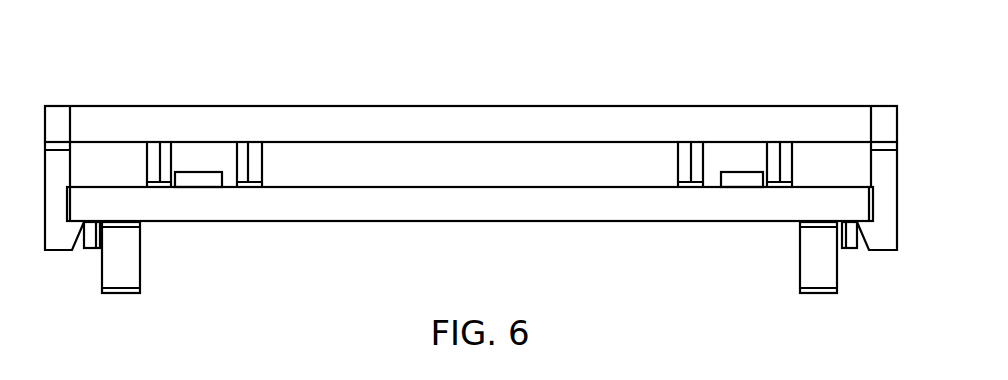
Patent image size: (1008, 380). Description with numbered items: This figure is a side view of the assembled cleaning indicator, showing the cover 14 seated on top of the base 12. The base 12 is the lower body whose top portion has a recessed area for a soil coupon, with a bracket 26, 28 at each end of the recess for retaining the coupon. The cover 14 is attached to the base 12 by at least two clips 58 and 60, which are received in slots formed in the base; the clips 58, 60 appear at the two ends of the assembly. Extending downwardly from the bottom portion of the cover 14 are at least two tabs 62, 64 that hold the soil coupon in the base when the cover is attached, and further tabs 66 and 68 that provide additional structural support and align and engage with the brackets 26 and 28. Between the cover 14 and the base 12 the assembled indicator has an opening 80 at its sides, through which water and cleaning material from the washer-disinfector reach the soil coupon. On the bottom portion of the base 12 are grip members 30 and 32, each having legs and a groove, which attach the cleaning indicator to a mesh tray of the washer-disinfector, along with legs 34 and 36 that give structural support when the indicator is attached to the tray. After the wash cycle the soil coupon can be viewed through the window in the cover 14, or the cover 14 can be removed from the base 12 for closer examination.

The base 12 is at (93, 123).
The cover 14 is at (583, 205).
The bracket 26 is at (197, 178).
The bracket 28 is at (738, 178).
The grip member 30 is at (130, 261).
The grip member 32 is at (808, 263).
The leg 34 is at (92, 247).
The leg 36 is at (847, 245).
The clip 58 is at (57, 207).
The clip 60 is at (888, 205).
The tab 62 is at (250, 152).
The tab 64 is at (686, 152).
The tab 66 is at (786, 148).
The tab 68 is at (153, 152).
The opening 80 is at (486, 180).